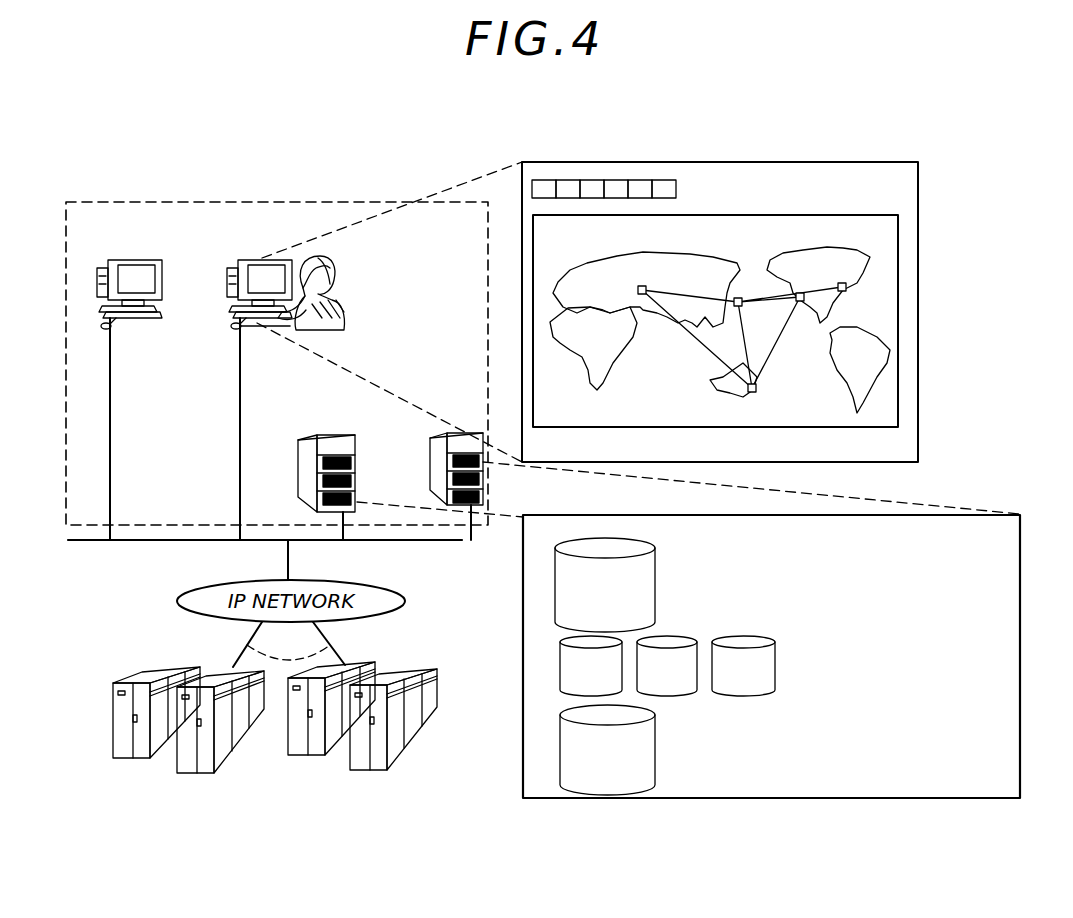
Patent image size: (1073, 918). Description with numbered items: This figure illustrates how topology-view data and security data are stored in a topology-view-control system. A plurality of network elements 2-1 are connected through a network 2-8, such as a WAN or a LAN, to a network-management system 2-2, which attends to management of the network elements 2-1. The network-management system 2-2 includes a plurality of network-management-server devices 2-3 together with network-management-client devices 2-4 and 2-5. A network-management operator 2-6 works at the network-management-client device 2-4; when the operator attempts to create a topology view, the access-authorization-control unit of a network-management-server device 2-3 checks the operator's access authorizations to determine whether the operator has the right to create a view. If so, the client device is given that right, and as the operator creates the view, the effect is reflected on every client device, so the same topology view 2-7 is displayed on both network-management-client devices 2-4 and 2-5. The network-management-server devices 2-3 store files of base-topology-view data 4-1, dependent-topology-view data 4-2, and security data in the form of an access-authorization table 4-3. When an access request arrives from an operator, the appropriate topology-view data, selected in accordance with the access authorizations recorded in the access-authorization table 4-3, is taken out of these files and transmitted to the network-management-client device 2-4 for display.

The network elements 2-1 is at (122, 758).
The network-management system 2-2 is at (115, 200).
The network-management-server devices 2-3 is at (298, 452).
The network-management-client device 2-4 is at (243, 264).
The network-management-client device 2-5 is at (122, 264).
The network-management operator 2-6 is at (340, 312).
The topology view 2-7 is at (730, 427).
The network 2-8 is at (72, 540).
The base-topology-view data 4-1 is at (655, 548).
The dependent-topology-view data 4-2 is at (770, 640).
The access-authorization table 4-3 is at (655, 722).